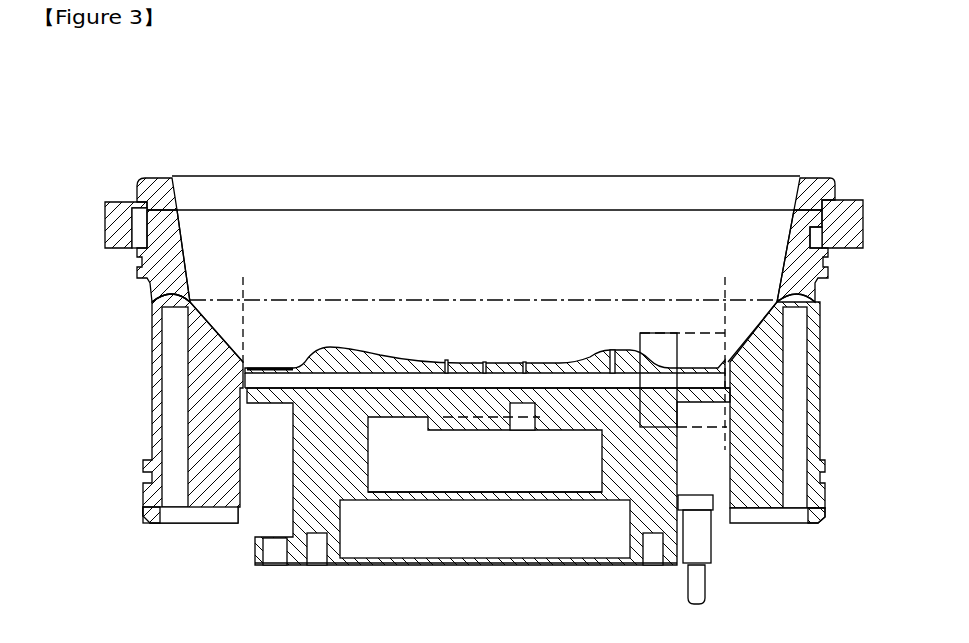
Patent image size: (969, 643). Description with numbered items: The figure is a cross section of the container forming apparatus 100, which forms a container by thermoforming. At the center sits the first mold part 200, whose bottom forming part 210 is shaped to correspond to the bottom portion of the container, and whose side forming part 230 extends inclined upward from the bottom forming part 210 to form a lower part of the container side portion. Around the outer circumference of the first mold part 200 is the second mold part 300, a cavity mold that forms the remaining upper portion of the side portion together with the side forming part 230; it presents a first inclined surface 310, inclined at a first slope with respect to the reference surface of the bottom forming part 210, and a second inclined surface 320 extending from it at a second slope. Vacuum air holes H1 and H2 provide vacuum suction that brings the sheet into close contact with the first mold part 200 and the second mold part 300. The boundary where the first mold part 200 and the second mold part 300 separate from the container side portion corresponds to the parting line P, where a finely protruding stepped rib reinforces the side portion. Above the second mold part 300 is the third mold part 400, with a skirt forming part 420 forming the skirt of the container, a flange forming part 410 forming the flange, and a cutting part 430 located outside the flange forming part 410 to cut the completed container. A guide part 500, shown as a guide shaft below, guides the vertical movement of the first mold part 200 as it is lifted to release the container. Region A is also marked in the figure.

The container forming apparatus 100 is at (159, 88).
The first mold part 200 is at (297, 500).
The bottom forming part 210 is at (281, 367).
The side forming part 230 is at (260, 367).
The second mold part 300 is at (212, 441).
The first inclined surface 310 is at (252, 301).
The second inclined surface 320 is at (193, 277).
The third mold part 400 is at (105, 221).
The flange forming part 410 is at (151, 178).
The skirt forming part 420 is at (175, 188).
The cutting part 430 is at (113, 202).
The guide part 500 is at (706, 586).
The vacuum air hole H1 is at (543, 360).
The vacuum air hole H2 is at (152, 302).
The parting line P is at (243, 284).
The region A is at (753, 378).